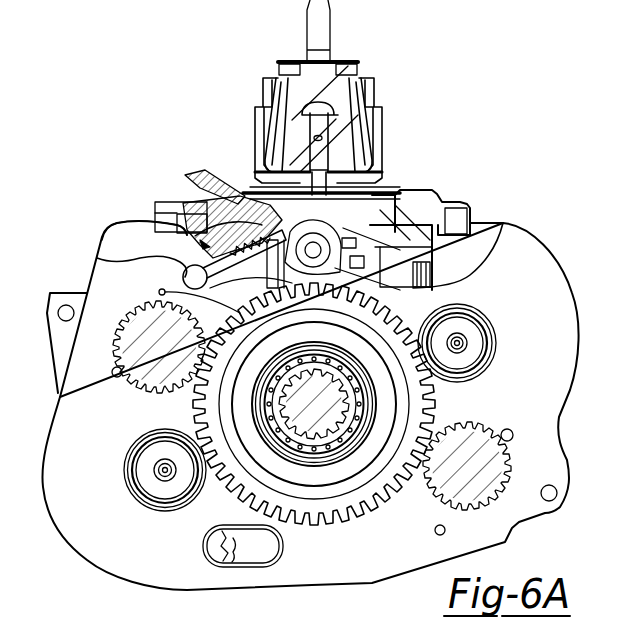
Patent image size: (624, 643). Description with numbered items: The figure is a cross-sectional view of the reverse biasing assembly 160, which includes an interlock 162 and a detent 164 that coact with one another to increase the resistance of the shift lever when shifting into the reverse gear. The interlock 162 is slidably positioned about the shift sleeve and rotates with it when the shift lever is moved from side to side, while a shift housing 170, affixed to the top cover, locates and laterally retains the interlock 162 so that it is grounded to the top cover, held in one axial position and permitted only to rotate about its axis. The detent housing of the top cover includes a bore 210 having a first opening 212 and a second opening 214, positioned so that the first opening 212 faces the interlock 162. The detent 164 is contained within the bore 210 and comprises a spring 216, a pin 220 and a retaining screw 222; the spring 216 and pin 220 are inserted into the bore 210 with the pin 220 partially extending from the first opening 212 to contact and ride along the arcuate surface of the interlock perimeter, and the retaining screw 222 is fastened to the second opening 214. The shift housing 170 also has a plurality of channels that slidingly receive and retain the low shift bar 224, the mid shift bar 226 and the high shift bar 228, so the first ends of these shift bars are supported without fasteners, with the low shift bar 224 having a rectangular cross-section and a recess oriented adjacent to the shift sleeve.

The reverse biasing assembly 160 is at (338, 145).
The interlock 162 is at (258, 185).
The detent 164 is at (205, 240).
The shift housing 170 is at (430, 237).
The bore 210 is at (240, 247).
The first opening 212 is at (158, 292).
The second opening 214 is at (97, 258).
The spring 216 is at (230, 235).
The pin 220 is at (225, 225).
The retaining screw 222 is at (113, 233).
The low shift bar 224 is at (420, 237).
The mid shift bar 226 is at (471, 222).
The high shift bar 228 is at (503, 225).